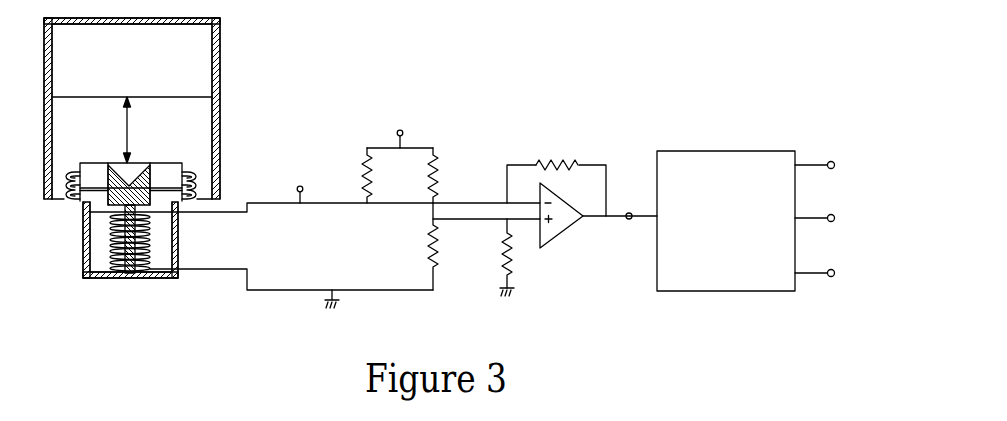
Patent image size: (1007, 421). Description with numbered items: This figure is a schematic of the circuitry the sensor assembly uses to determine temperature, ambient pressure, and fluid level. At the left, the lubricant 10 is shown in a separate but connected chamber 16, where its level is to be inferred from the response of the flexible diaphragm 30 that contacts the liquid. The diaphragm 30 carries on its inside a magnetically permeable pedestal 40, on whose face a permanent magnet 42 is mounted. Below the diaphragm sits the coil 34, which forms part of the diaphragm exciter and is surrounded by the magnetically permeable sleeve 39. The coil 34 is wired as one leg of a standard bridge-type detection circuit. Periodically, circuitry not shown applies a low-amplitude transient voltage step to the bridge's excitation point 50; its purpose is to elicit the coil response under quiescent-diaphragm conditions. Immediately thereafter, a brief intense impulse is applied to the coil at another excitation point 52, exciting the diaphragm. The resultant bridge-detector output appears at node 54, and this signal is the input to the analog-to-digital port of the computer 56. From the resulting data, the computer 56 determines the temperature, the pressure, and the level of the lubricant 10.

The lubricant 10 is at (93, 142).
The separate but connected chamber 16 is at (93, 72).
The diaphragm 30 is at (187, 168).
The coil 34 is at (143, 247).
The magnetically permeable sleeve 39 is at (83, 231).
The magnetically permeable pedestal 40 is at (139, 184).
The permanent magnet 42 is at (162, 176).
The excitation point 50 is at (403, 131).
The excitation point 52 is at (302, 187).
The node 54 is at (630, 213).
The computer 56 is at (726, 151).